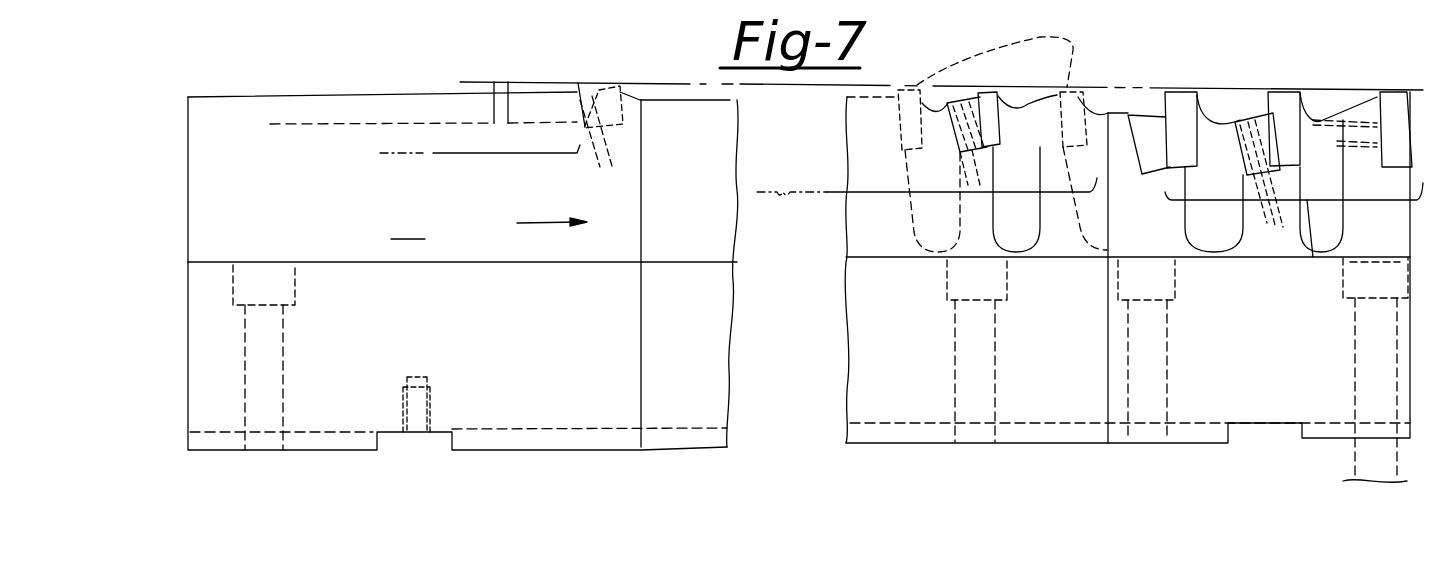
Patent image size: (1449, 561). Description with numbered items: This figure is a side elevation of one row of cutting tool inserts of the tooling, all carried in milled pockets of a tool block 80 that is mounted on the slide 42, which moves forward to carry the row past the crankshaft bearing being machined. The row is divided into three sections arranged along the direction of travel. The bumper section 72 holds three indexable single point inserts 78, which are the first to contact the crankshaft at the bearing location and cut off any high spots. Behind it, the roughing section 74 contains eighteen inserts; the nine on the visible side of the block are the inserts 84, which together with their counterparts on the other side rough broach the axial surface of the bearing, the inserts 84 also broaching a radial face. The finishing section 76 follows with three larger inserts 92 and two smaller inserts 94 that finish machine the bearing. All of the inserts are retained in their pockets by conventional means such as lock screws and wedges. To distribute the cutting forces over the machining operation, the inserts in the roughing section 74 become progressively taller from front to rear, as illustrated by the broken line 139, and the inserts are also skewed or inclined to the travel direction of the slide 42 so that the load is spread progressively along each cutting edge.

The slide 42 is at (637, 460).
The bumper section 72 is at (1313, 257).
The roughing section 74 is at (863, 192).
The finishing section 76 is at (487, 153).
The indexable single point inserts 78 is at (1377, 95).
The tool block 80 is at (411, 228).
The roughing inserts 84 is at (987, 95).
The larger finishing inserts 92 is at (503, 92).
The smaller finishing inserts 94 is at (607, 83).
The broken line 139 is at (1187, 100).